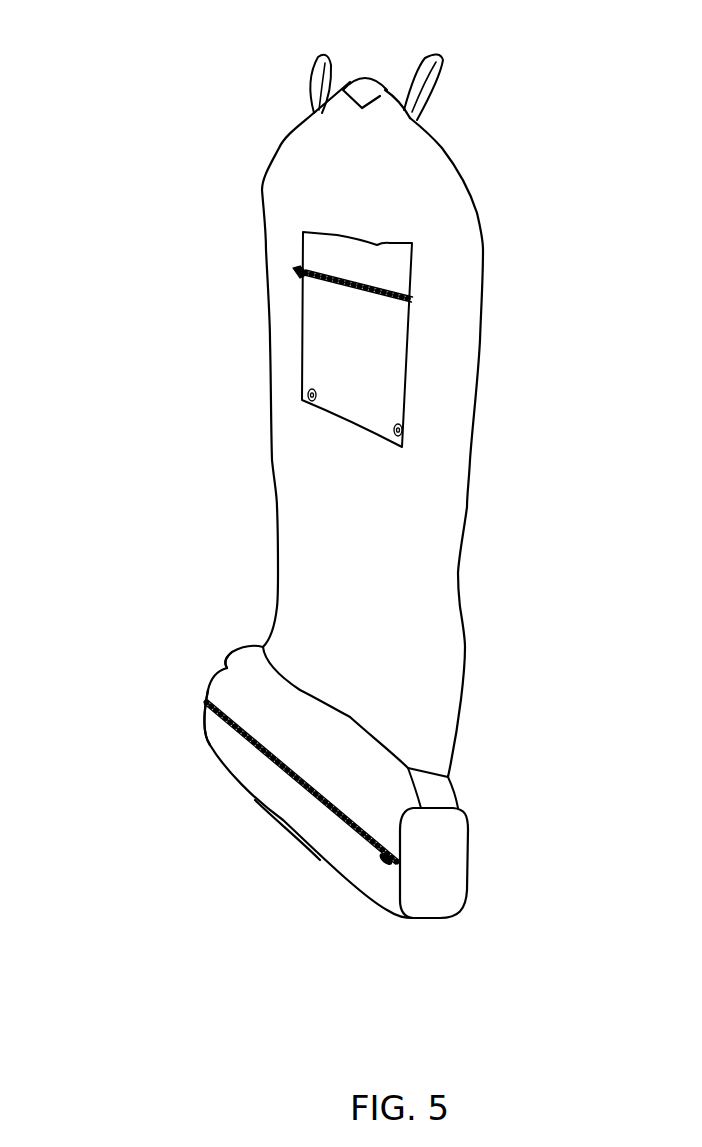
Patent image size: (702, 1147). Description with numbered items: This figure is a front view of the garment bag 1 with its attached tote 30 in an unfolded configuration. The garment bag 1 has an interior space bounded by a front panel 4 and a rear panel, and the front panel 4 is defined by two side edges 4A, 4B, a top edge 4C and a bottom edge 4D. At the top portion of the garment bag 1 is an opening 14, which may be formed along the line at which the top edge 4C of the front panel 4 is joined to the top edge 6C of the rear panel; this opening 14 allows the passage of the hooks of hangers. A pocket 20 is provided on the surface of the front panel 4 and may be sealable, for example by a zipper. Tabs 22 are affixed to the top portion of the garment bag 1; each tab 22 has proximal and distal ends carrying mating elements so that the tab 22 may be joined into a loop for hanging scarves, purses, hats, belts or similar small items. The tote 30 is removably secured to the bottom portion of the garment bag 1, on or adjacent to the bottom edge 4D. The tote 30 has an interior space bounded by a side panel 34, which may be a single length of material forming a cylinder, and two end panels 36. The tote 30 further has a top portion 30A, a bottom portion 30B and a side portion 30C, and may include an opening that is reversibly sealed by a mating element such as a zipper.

The garment bag 1 is at (192, 128).
The front panel 4 is at (462, 255).
The side edge of front panel 4A is at (270, 290).
The side edge of front panel 4B is at (482, 328).
The top edge of front panel 4C is at (413, 118).
The bottom edge of front panel 4D is at (447, 787).
The top edge of rear panel 6C is at (372, 72).
The opening 14 is at (360, 92).
The pocket 20 is at (383, 352).
The tab 22 is at (313, 72).
The tote 30 is at (114, 607).
The top portion of tote 30A is at (455, 807).
The bottom portion of tote 30B is at (297, 820).
The side portion of tote 30C is at (252, 675).
The side panel of tote 34 is at (232, 684).
The end panel of tote 36 is at (452, 870).